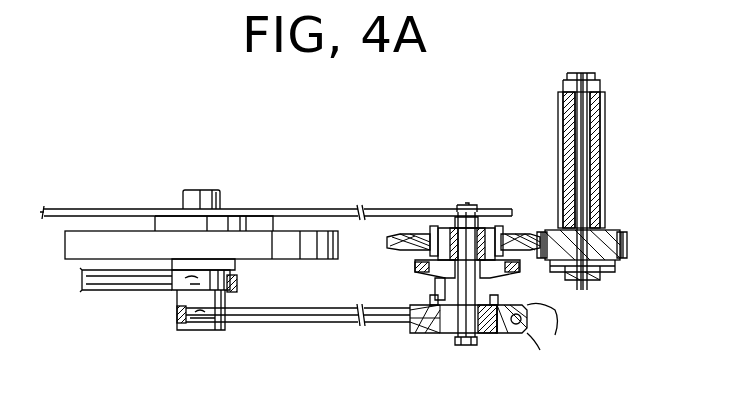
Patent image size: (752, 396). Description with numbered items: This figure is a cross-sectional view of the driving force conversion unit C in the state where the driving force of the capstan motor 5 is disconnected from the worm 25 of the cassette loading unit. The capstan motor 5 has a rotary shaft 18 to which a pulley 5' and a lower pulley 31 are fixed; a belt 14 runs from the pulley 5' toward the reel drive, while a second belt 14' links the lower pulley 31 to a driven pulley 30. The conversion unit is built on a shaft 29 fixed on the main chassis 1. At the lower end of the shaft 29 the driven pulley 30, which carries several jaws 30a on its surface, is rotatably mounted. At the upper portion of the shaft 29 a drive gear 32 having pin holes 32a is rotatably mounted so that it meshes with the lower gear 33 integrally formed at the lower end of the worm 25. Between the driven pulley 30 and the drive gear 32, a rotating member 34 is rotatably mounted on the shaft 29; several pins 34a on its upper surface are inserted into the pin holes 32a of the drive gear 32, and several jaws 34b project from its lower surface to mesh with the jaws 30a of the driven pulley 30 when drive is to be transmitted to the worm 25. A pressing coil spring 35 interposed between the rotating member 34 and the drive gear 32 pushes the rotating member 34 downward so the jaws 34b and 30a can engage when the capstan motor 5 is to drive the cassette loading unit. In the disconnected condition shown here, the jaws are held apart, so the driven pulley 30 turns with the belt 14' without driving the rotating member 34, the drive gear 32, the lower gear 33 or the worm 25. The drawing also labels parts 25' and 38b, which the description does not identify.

The main chassis 1 is at (284, 203).
The capstan motor 5 is at (191, 293).
The pulley 5' is at (195, 320).
The belt 14 is at (126, 319).
The belt 14' is at (298, 337).
The rotary shaft 18 is at (190, 191).
The worm 25 is at (611, 149).
The rod 25' is at (621, 181).
The shaft 29 is at (458, 322).
The driven pulley 30 is at (512, 334).
The jaws 30a is at (527, 318).
The lower pulley 31 is at (198, 320).
The drive gear 32 is at (412, 233).
The pin holes 32a is at (520, 233).
The lower gear 33 is at (625, 247).
The rotating member 34 is at (412, 263).
The pins 34a is at (446, 226).
The jaws 34b is at (436, 290).
The pressing coil spring 35 is at (484, 224).
The plate 38b is at (520, 272).
The driving force conversion unit C is at (472, 185).